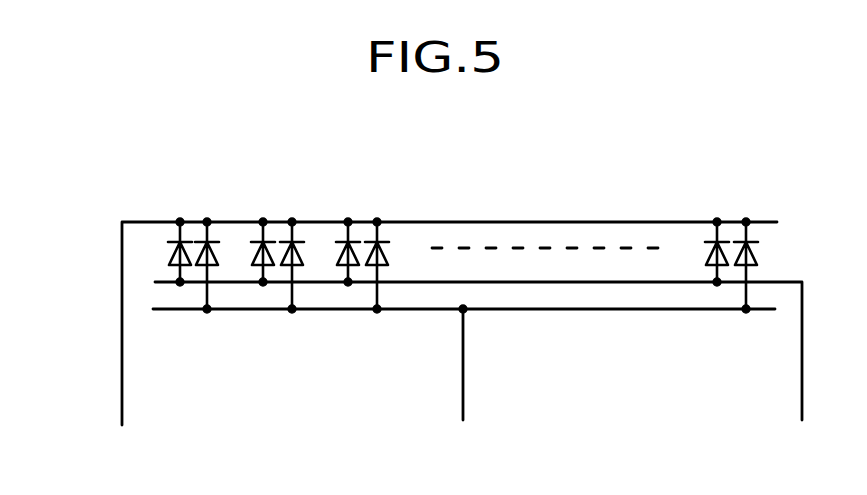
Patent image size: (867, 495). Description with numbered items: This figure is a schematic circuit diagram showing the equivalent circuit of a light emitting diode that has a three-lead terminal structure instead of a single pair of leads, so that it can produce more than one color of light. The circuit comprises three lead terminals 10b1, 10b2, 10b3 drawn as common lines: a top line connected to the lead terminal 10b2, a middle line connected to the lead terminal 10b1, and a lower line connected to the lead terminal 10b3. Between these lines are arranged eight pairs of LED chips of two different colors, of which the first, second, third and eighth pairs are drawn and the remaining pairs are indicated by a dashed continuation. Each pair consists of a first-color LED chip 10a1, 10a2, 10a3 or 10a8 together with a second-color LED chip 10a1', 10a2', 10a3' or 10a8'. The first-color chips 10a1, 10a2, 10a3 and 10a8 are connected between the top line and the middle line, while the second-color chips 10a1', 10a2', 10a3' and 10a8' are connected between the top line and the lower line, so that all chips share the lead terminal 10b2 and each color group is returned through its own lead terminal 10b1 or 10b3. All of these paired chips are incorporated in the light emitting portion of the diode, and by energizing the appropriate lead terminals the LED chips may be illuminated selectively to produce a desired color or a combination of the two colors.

The LED chip 10a1 is at (153, 227).
The LED chip 10a2 is at (251, 227).
The LED chip 10a3 is at (344, 227).
The LED chip 10a8 is at (704, 227).
The LED chip 10a1' is at (218, 300).
The LED chip 10a2' is at (314, 300).
The LED chip 10a3' is at (405, 300).
The LED chip 10a8' is at (731, 300).
The lead terminal 10b1 is at (803, 392).
The lead terminal 10b2 is at (122, 385).
The lead terminal 10b3 is at (464, 388).